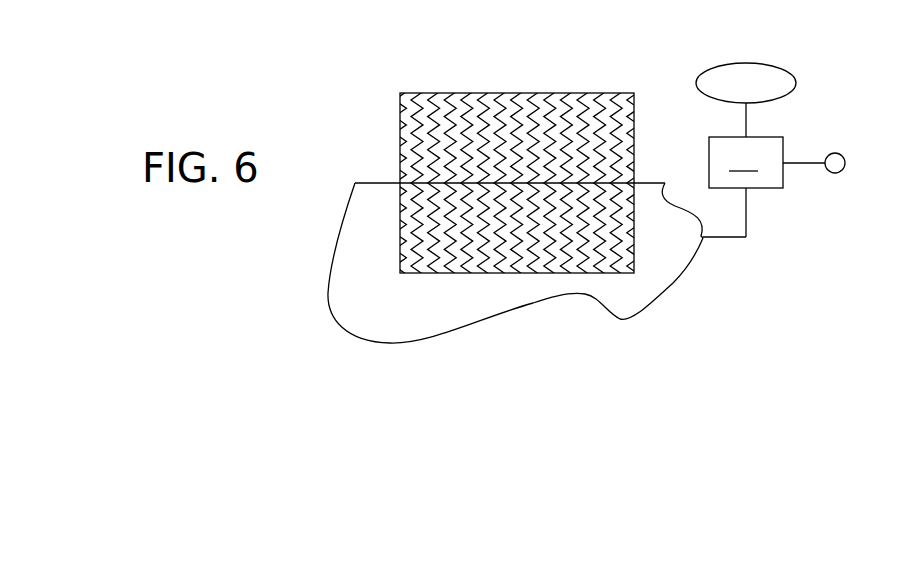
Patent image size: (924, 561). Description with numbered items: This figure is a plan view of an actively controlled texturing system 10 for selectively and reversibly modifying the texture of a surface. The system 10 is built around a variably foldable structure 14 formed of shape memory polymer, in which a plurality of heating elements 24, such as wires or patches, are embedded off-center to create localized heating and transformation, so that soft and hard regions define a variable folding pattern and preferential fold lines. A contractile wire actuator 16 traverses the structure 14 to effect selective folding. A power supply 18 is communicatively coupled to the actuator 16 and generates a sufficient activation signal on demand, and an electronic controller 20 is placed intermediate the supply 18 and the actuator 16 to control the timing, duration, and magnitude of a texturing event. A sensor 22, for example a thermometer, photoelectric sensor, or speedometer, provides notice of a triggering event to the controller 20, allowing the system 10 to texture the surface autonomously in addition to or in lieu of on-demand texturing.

The system 10 is at (400, 54).
The variably foldable structure 14 is at (491, 93).
The contractile wire actuator 16 is at (380, 183).
The power supply 18 is at (773, 64).
The electronic controller 20 is at (764, 187).
The sensor 22 is at (848, 161).
The heating elements 24 is at (412, 101).